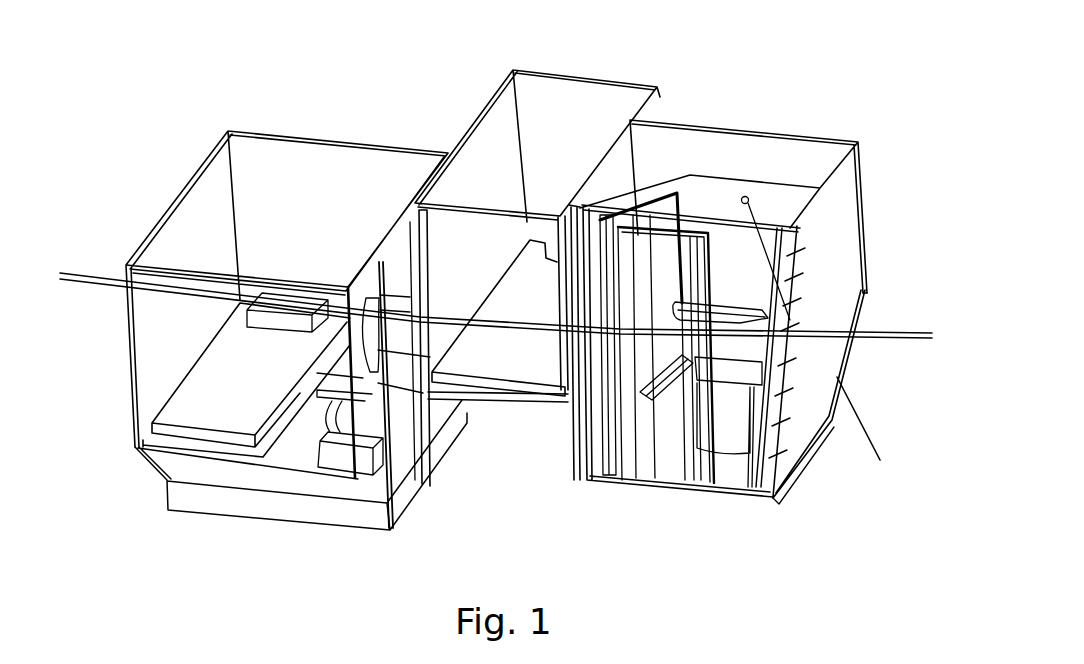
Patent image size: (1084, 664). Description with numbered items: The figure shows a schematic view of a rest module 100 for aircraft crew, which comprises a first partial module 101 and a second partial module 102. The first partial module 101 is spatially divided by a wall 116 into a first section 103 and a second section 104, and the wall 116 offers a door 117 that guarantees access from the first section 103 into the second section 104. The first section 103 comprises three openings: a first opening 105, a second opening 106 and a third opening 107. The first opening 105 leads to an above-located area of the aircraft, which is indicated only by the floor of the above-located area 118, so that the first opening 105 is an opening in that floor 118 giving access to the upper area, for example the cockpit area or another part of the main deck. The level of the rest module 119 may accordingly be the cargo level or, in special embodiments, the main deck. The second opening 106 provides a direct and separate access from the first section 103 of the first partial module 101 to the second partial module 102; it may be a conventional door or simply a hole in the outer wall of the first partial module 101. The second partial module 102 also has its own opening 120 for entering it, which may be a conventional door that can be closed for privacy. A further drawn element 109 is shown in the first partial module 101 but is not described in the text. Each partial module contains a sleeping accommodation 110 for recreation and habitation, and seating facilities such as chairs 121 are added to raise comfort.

The rest module 100 is at (176, 99).
The first partial module 101 is at (869, 176).
The second partial module 102 is at (287, 160).
The first section 103 is at (877, 462).
The second section 104 is at (583, 90).
The first opening 105 is at (769, 206).
The second opening 106 is at (637, 372).
The third opening 107 is at (643, 194).
The guide rails 109 is at (783, 380).
The sleeping accommodation 110 is at (229, 418).
The wall 116 is at (767, 177).
The door 117 is at (663, 200).
The floor of the above-located area 118 is at (882, 295).
The level of the rest module 119 is at (865, 404).
The opening 120 is at (410, 468).
The chairs 121 is at (397, 357).